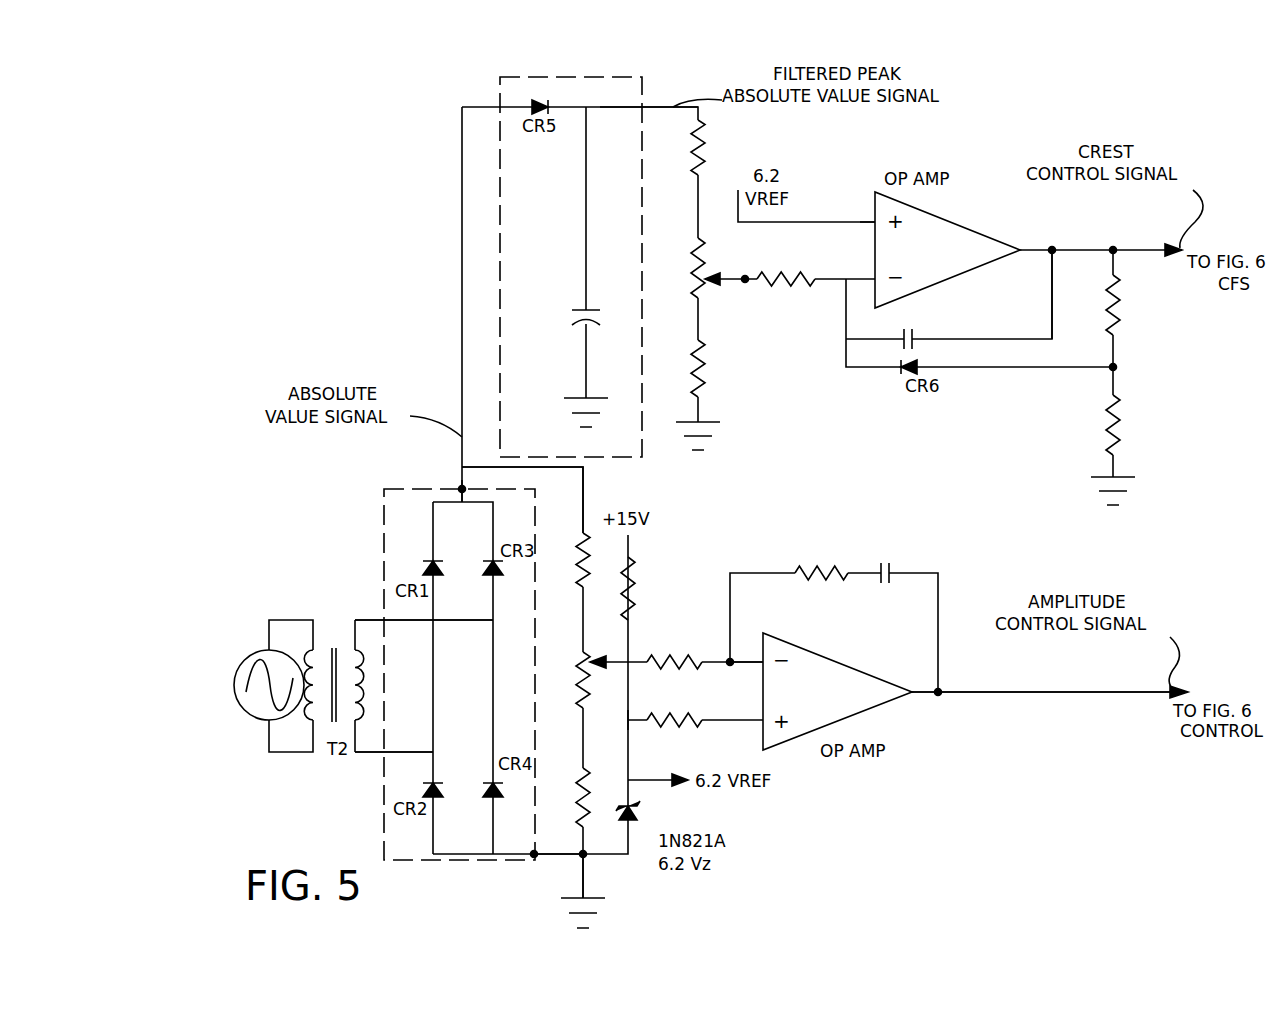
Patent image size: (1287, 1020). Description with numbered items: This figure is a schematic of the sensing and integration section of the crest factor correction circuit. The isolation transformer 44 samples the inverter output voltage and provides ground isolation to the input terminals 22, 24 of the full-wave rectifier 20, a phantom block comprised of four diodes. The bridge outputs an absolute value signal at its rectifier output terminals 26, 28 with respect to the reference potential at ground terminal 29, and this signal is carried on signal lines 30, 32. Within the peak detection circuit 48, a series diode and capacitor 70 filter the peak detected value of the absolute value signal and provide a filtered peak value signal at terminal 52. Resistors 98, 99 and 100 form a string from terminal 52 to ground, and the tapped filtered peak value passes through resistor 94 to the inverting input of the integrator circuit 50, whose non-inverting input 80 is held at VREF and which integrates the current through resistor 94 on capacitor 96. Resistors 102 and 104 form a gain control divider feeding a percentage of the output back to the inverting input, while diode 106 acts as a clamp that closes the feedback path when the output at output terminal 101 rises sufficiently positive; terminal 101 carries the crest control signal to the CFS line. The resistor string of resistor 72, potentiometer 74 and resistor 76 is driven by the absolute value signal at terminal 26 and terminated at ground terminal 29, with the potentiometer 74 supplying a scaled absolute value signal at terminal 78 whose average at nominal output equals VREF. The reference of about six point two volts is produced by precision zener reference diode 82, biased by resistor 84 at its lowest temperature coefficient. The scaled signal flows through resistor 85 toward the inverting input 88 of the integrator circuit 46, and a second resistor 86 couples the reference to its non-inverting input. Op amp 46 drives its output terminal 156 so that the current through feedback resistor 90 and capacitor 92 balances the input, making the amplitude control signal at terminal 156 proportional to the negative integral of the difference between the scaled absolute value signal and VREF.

The full-wave rectifier 20 is at (418, 514).
The rectifier input terminal 22 is at (384, 620).
The rectifier input terminal 24 is at (384, 752).
The rectifier output terminal 26 is at (537, 862).
The rectifier output terminal 28 is at (462, 489).
The ground terminal 29 is at (589, 891).
The signal line 30 is at (572, 857).
The signal line 32 is at (585, 472).
The transformer T2 44 is at (435, 370).
The integrator circuit 46 is at (823, 703).
The peak detection circuit 48 is at (553, 229).
The integrator circuit 50 is at (947, 250).
The terminal 52 is at (643, 107).
The capacitor 70 is at (589, 309).
The resistor 72 is at (572, 560).
The potentiometer 74 is at (577, 665).
The resistor 76 is at (572, 798).
The terminal 78 is at (620, 660).
The terminal 80 is at (873, 220).
The precision zener reference diode 82 is at (638, 814).
The resistor 84 is at (651, 572).
The resistor 85 is at (668, 656).
The input resistor 20K 86 is at (668, 714).
The inverting input 88 is at (750, 660).
The resistor 90 is at (812, 567).
The capacitor 92 is at (890, 573).
The resistor 94 is at (785, 275).
The capacitor 96 is at (914, 345).
The resistor 61.9K 98 is at (692, 150).
The potentiometer 10K 99 is at (692, 244).
The resistor 20K 100 is at (692, 372).
The output terminal 101 is at (1038, 248).
The resistor 102 is at (746, 274).
The resistor 104 is at (1122, 425).
The diode 106 is at (903, 368).
The output terminal 156 is at (942, 690).